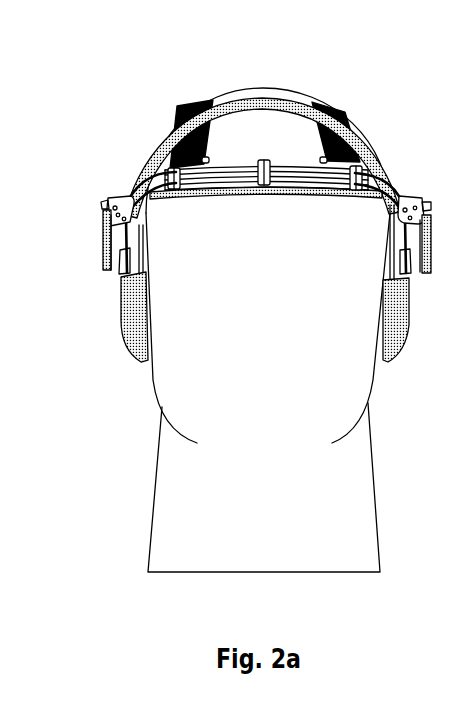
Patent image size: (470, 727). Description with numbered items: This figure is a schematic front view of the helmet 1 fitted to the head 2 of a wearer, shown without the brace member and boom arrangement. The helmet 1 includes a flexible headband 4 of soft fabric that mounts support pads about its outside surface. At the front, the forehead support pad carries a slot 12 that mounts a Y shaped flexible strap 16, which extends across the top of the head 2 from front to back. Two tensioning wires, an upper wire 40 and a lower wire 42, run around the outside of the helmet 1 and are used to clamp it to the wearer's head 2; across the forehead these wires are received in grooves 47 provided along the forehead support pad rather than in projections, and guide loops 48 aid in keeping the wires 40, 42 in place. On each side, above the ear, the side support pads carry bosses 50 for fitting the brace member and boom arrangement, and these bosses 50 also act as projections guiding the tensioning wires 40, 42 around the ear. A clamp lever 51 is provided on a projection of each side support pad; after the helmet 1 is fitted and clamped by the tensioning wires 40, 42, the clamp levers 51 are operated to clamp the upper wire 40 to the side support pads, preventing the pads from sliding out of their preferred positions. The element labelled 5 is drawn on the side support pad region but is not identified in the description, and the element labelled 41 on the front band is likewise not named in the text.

The helmet 1 is at (384, 108).
The head 2 is at (272, 552).
The flexible headband 4 is at (167, 148).
The ear cup 5 is at (431, 246).
The slot 12 is at (251, 157).
The Y shaped flexible strap 16 is at (203, 106).
The upper tensioning wire 40 is at (281, 153).
The lower band strip 41 is at (304, 193).
The lower tensioning wire 42 is at (376, 203).
The groove 47 is at (303, 163).
The guide loop 48 is at (176, 189).
The boss 50 is at (104, 248).
The clamp lever 51 is at (413, 207).